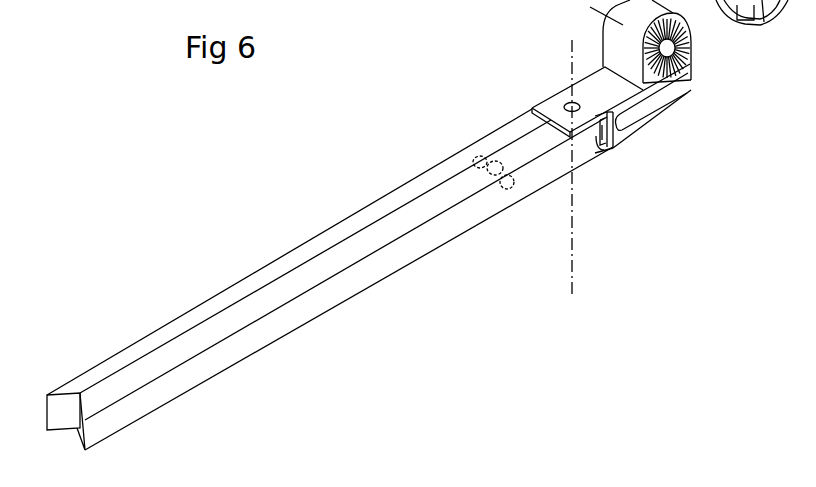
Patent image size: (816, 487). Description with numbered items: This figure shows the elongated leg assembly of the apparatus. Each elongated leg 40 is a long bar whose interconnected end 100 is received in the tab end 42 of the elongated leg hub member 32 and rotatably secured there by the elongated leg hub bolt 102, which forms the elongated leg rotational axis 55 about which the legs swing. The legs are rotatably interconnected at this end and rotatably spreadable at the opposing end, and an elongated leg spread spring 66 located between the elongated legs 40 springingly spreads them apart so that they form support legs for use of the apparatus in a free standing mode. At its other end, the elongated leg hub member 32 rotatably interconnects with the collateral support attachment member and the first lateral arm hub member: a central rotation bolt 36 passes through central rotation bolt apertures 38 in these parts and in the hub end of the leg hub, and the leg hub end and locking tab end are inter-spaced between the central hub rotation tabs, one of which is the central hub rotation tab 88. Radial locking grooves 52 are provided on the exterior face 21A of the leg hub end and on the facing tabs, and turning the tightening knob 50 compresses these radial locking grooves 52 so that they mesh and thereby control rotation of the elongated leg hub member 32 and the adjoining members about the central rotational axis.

The elongated leg 40 is at (420, 240).
The elongated leg spread spring 66 is at (500, 178).
The elongated leg hub bolt 102 is at (555, 108).
The elongated leg rotational axis 55 is at (574, 183).
The interconnected end 100 is at (590, 157).
The tab end 42 is at (600, 155).
The elongated leg hub member 32 is at (606, 94).
The central rotation bolt 36 is at (712, 0).
The radial locking grooves 52 is at (678, 63).
The exterior face 21A is at (662, 58).
The central rotation bolt apertures 38 is at (758, 27).
The tightening knob 50 is at (771, 0).
The central hub rotation tab 88 is at (793, 0).